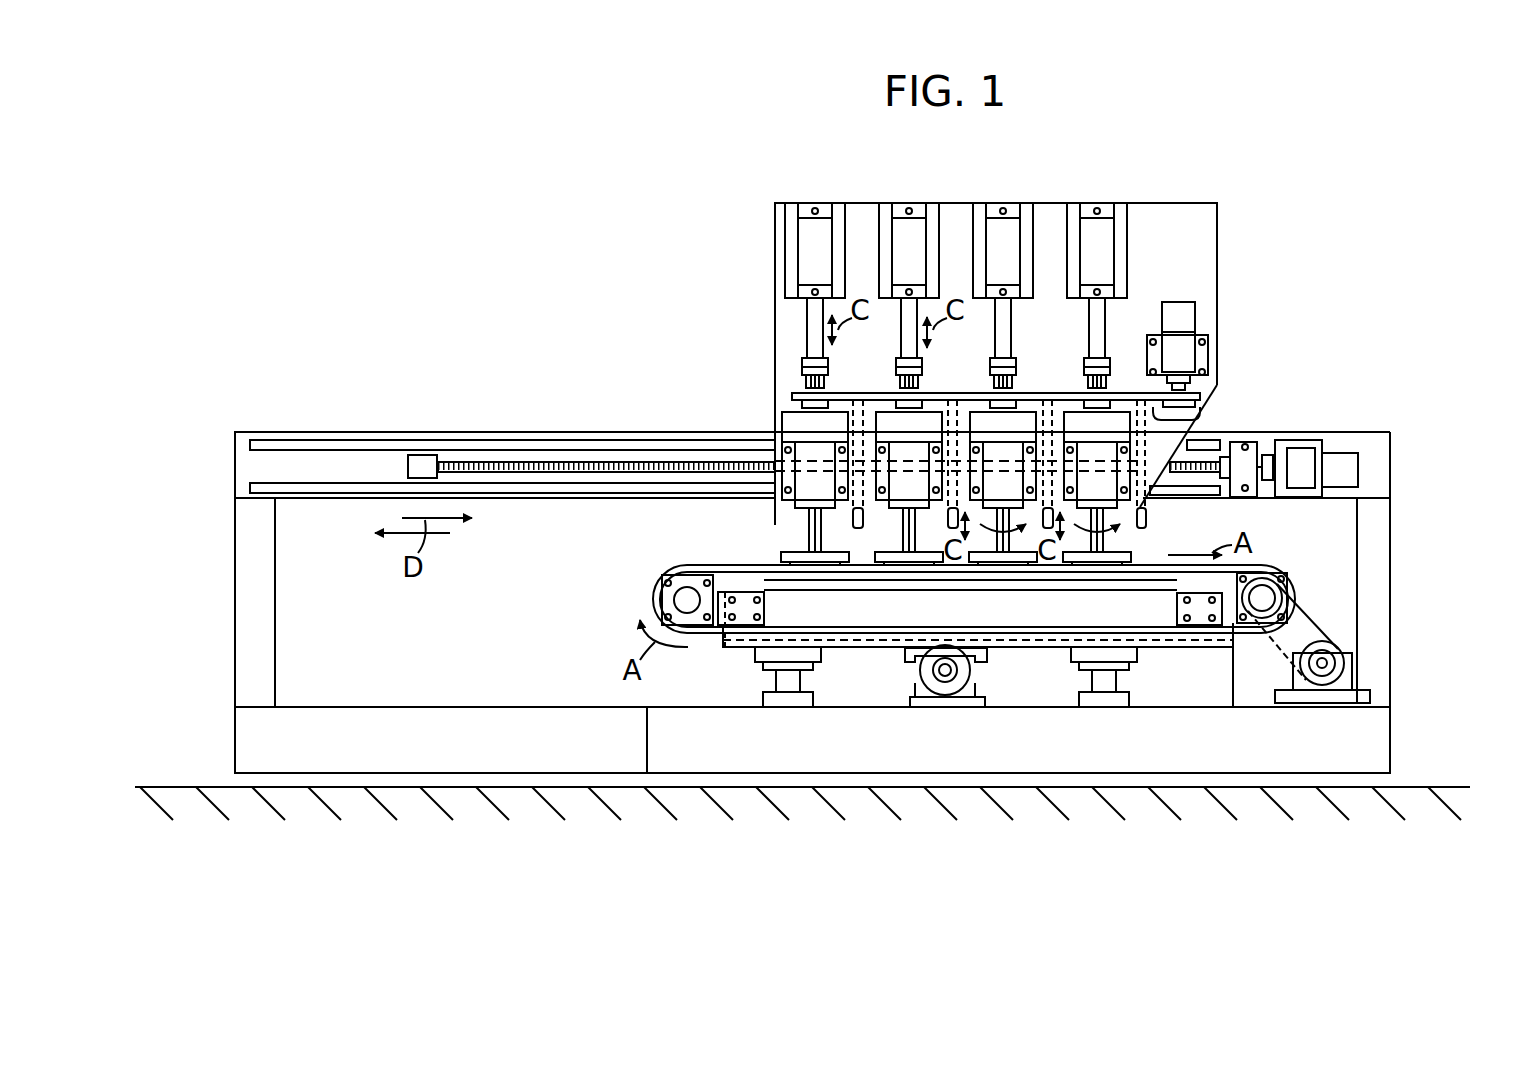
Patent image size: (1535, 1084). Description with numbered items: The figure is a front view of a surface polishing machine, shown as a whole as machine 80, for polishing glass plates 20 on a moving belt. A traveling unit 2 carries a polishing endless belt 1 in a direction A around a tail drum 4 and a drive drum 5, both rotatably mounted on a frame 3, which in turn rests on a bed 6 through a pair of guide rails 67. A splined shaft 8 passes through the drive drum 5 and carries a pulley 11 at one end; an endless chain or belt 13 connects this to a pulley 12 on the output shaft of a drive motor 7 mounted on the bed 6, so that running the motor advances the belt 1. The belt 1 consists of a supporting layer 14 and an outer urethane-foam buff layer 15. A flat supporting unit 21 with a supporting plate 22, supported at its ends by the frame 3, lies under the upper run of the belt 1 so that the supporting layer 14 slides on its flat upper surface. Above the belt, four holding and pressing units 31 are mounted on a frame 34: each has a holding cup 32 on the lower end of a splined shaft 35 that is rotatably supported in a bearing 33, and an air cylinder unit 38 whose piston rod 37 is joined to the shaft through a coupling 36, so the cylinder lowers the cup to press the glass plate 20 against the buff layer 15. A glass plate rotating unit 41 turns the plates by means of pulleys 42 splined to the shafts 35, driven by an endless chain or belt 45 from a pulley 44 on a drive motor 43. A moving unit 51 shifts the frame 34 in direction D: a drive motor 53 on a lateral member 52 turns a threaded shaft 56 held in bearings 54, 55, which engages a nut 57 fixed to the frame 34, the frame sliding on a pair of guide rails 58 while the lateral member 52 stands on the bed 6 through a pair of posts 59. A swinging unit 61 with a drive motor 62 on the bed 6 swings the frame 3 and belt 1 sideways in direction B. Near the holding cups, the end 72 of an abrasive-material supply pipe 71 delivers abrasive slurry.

The polishing endless belt 1 is at (1273, 573).
The traveling unit 2 is at (1323, 620).
The frame 3 is at (1197, 647).
The tail drum 4 is at (655, 603).
The drive drum 5 is at (1305, 608).
The bed 6 is at (1375, 740).
The drive motor 7 is at (1347, 653).
The splined shaft 8 is at (1303, 593).
The pulley 11 is at (1288, 577).
The pulley 12 is at (1343, 675).
The endless chain or belt 13 is at (1343, 623).
The supporting layer 14 is at (728, 637).
The buff layer 15 is at (705, 567).
The glass plate 20 is at (815, 565).
The flat supporting unit 21 is at (787, 630).
The supporting plate 22 is at (848, 620).
The holding and pressing unit 31 is at (918, 197).
The holding cup 32 is at (778, 556).
The bearing 33 is at (792, 440).
The frame 34 is at (780, 280).
The splined shaft 35 is at (790, 550).
The coupling 36 is at (828, 360).
The piston rod 37 is at (806, 318).
The air cylinder unit 38 is at (903, 235).
The glass plate rotating unit 41 is at (1195, 272).
The pulley 42 is at (905, 395).
The drive motor 43 is at (1187, 340).
The pulley 44 is at (1203, 387).
The endless chain or belt 45 is at (1203, 420).
The moving unit 51 is at (1345, 450).
The lateral member 52 is at (1375, 478).
The drive motor 53 is at (1315, 463).
The bearing 54 is at (1250, 462).
The bearing 55 is at (422, 457).
The threaded shaft 56 is at (502, 462).
The nut 57 is at (1193, 503).
The guide rails 58 is at (315, 487).
The posts 59 is at (245, 565).
The swinging unit 61 is at (922, 712).
The drive motor 62 is at (963, 670).
The guide rails 67 is at (800, 682).
The abrasive-material supply pipe 71 is at (1158, 520).
The end of abrasive-material supply pipe 72 is at (812, 558).
The apparatus 80 is at (628, 310).